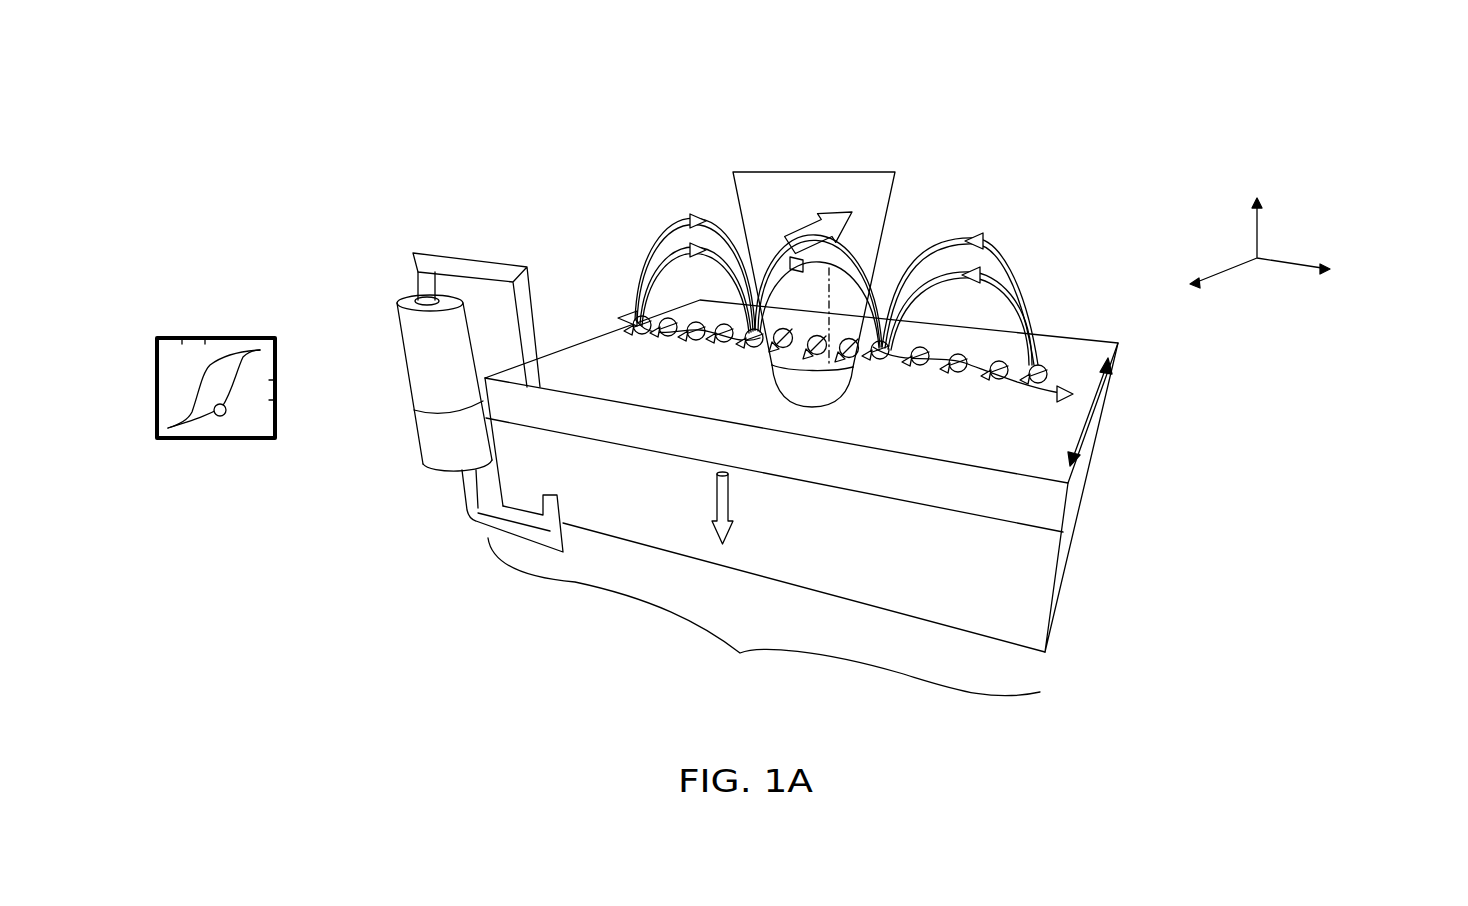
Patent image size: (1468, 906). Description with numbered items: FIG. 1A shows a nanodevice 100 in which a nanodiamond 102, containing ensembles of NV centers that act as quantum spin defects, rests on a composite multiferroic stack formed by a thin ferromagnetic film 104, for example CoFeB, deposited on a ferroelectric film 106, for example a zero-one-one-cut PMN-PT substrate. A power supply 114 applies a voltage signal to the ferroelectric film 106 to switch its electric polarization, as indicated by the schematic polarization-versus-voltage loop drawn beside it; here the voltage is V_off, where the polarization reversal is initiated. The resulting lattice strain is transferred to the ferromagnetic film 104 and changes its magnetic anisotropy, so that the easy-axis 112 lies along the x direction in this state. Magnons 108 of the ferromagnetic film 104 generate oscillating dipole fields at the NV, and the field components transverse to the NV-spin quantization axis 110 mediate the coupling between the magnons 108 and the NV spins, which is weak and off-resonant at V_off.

The nanodevice 100 is at (621, 86).
The nanodiamond 102 is at (812, 228).
The ferromagnetic (FM) film 104 is at (1055, 507).
The ferroelectric (FE) film 106 is at (1037, 607).
The magnons 108 is at (644, 316).
The NV-spin quantization axis 110 is at (831, 290).
The easy-axis 112 is at (1088, 422).
The power supply 114 is at (417, 298).